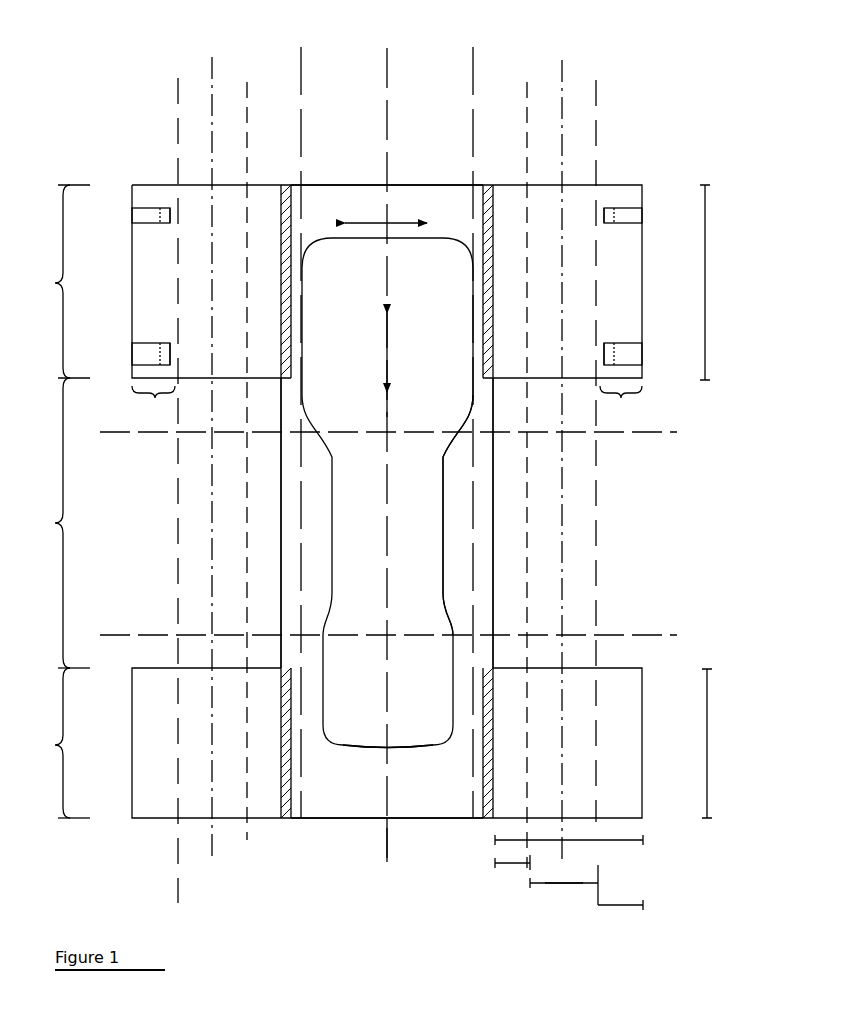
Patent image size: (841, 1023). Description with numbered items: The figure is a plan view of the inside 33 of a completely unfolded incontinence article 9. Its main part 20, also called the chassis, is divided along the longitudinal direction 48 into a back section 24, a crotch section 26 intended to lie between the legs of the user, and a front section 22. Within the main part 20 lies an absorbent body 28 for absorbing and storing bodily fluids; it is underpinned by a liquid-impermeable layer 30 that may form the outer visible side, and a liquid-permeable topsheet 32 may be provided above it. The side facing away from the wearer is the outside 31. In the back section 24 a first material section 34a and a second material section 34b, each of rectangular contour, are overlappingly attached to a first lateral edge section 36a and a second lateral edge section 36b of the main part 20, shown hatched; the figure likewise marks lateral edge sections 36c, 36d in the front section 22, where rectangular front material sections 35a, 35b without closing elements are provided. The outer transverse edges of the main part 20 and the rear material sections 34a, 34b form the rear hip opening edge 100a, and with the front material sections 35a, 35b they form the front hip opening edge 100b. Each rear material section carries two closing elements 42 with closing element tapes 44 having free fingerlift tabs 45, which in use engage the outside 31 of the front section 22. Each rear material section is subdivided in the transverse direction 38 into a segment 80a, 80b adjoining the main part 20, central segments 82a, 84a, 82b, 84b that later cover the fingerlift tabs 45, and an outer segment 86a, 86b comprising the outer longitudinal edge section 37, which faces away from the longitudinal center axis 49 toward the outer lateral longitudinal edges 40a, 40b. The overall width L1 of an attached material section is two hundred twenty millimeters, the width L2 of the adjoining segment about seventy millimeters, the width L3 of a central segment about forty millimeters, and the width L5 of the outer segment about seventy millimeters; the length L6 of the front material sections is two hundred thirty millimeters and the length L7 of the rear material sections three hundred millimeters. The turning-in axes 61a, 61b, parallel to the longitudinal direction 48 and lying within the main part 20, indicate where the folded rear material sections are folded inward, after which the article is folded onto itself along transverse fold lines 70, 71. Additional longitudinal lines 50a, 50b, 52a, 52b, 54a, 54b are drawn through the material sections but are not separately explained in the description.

The incontinence article 9 is at (363, 122).
The main part 20 is at (386, 181).
The front section 22 is at (55, 743).
The back section 24 is at (55, 281).
The crotch section 26 is at (55, 523).
The absorbent body 28 is at (384, 745).
The liquid-impermeable layer 30 is at (483, 470).
The outside 31 is at (483, 560).
The liquid-permeable topsheet 32 is at (487, 522).
The inside 33 is at (485, 610).
The first material section 34a is at (203, 195).
The second material section 34b is at (578, 195).
The front material section 35a is at (157, 680).
The front material section 35b is at (618, 680).
The first lateral edge section 36a is at (286, 195).
The second lateral edge section 36b is at (488, 195).
The side panel attachment zone 36c is at (287, 812).
The side panel attachment zone 36d is at (488, 812).
The outer longitudinal edge section 37 is at (387, 404).
The transverse direction 38 is at (386, 210).
The outer lateral longitudinal edge 40a is at (281, 418).
The outer lateral longitudinal edge 40b is at (493, 418).
The closing element 42 is at (143, 218).
The closing element tape 44 is at (384, 271).
The free fingerlift tab 45 is at (167, 210).
The longitudinal direction 48 is at (401, 365).
The longitudinal center axis 49 is at (388, 872).
The outer side panel line 50a is at (180, 760).
The outer side panel line 50b is at (612, 760).
The side panel middle line 52a is at (213, 712).
The side panel middle line 52b is at (562, 712).
The side panel inner line 54a is at (270, 72).
The side panel inner line 54b is at (527, 82).
The turning-in axis 61a is at (301, 418).
The turning-in axis 61b is at (473, 418).
The fold line 70 is at (607, 436).
The fold line 71 is at (628, 635).
The segment adjoining the main part 80a is at (263, 281).
The segment adjoining the main part 80b is at (510, 281).
The central segment 82a is at (229, 281).
The central segment 82b is at (544, 281).
The central segment 84a is at (195, 281).
The central segment 84b is at (579, 281).
The outer segment 86a is at (155, 281).
The outer segment 86b is at (619, 281).
The rear hip opening edge 100a is at (431, 185).
The front hip opening edge 100b is at (421, 818).
The overall width L1 is at (587, 841).
The width of the segment adjoining the main part L2 is at (527, 864).
The width of the central segment L3 is at (592, 885).
The width of the outer segment L5 is at (638, 906).
The length of the front material sections L6 is at (716, 743).
The length of the rear material sections L7 is at (714, 282).